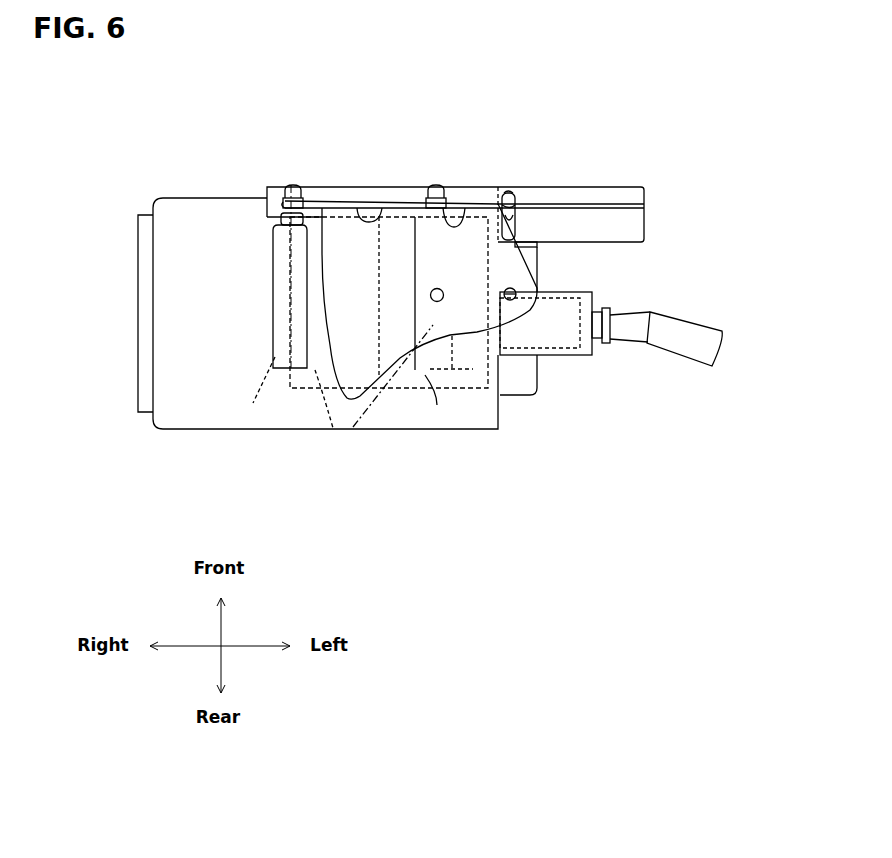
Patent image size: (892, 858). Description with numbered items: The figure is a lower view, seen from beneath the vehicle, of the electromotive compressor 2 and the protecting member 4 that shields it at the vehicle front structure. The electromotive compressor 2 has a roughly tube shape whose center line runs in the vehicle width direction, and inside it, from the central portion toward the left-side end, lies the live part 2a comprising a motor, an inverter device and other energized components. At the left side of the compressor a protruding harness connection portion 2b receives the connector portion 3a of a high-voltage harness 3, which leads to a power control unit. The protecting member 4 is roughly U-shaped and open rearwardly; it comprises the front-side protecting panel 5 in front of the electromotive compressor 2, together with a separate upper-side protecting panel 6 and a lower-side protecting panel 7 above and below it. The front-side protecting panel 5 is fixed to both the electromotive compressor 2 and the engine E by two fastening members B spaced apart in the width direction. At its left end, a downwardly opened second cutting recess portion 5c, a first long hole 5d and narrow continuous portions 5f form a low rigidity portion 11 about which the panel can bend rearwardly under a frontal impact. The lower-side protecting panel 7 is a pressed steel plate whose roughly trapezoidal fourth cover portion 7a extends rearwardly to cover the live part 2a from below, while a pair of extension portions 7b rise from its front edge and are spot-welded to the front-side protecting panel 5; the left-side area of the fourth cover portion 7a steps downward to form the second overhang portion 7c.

The electromotive compressor 2 is at (222, 441).
The live part 2a is at (463, 393).
The harness connection portion 2b is at (596, 293).
The high-voltage harness 3 is at (712, 321).
The connector portion 3a is at (597, 307).
The protecting member 4 is at (618, 166).
The front-side protecting panel 5 is at (550, 181).
The second cutting recess portion 5c is at (518, 193).
The first long hole 5d is at (515, 215).
The continuous portions 5f is at (507, 188).
The upper-side protecting panel 6 is at (547, 274).
The lower-side protecting panel 7 is at (345, 407).
The fourth cover portion 7a is at (280, 336).
The extension portions 7b is at (397, 190).
The second overhang portion 7c is at (437, 405).
The low rigidity portion 11 is at (498, 176).
The fastening members B is at (292, 185).
The engine E is at (273, 360).